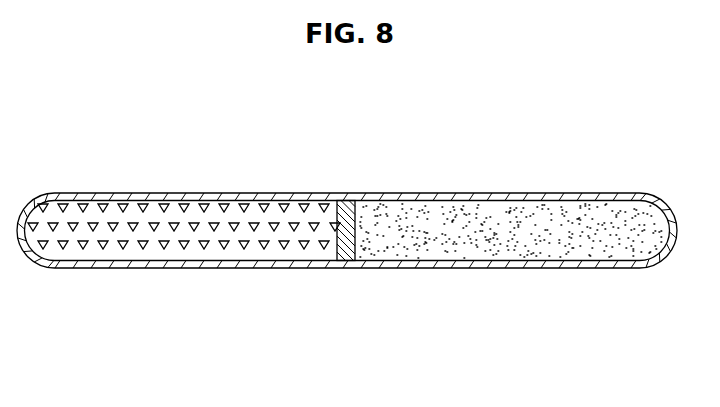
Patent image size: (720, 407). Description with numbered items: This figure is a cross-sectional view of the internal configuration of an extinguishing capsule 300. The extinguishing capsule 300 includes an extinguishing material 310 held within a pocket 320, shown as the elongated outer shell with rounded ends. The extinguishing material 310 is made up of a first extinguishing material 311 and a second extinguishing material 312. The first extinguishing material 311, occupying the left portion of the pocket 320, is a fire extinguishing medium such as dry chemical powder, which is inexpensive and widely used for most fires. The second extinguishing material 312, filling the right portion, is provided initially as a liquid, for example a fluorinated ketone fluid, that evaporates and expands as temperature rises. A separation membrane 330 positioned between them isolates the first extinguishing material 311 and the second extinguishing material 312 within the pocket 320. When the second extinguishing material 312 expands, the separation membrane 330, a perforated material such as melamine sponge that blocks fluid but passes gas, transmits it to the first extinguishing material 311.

The extinguishing capsule 300 is at (365, 97).
The extinguishing material 310 is at (246, 332).
The first extinguishing material 311 is at (175, 242).
The second extinguishing material 312 is at (365, 220).
The pocket 320 is at (532, 193).
The separation membrane 330 is at (356, 248).